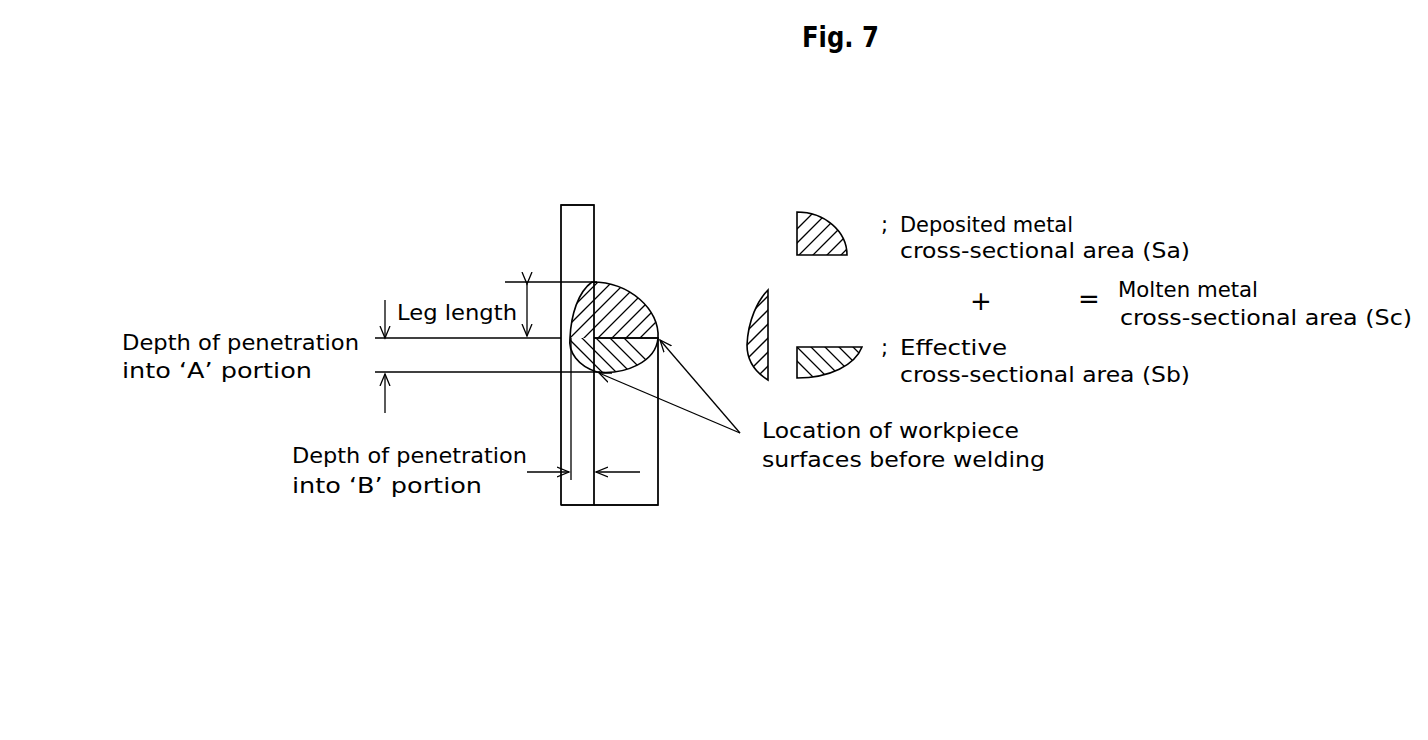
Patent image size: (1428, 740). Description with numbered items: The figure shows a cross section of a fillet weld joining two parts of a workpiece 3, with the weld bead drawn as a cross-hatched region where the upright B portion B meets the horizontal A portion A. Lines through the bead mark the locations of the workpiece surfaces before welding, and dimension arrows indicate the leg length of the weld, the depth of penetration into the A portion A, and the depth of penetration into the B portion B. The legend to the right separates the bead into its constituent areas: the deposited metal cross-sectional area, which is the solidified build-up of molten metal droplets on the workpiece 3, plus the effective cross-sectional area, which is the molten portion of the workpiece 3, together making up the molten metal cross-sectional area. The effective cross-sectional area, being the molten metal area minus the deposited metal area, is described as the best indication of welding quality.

The workpiece 3 is at (627, 517).
The A portion A is at (650, 452).
The B portion B is at (582, 495).